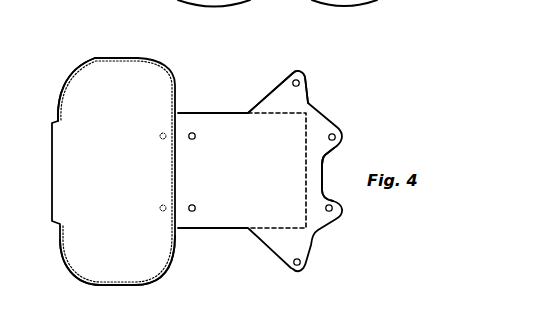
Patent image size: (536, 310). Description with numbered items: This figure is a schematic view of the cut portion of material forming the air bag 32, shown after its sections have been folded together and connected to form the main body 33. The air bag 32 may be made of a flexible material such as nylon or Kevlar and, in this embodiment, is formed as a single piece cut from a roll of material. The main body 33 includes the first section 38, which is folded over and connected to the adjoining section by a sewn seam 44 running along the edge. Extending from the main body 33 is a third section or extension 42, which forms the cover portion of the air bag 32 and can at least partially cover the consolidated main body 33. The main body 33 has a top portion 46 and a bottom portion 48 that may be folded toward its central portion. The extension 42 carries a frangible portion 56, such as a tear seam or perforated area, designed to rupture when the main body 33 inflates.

The air bag 32 is at (338, 98).
The main body 33 is at (184, 68).
The first section 38 is at (102, 262).
The extension 42 is at (272, 90).
The sewn seam 44 is at (132, 57).
The top portion 46 is at (82, 82).
The bottom portion 48 is at (150, 263).
The frangible portion 56 is at (315, 171).